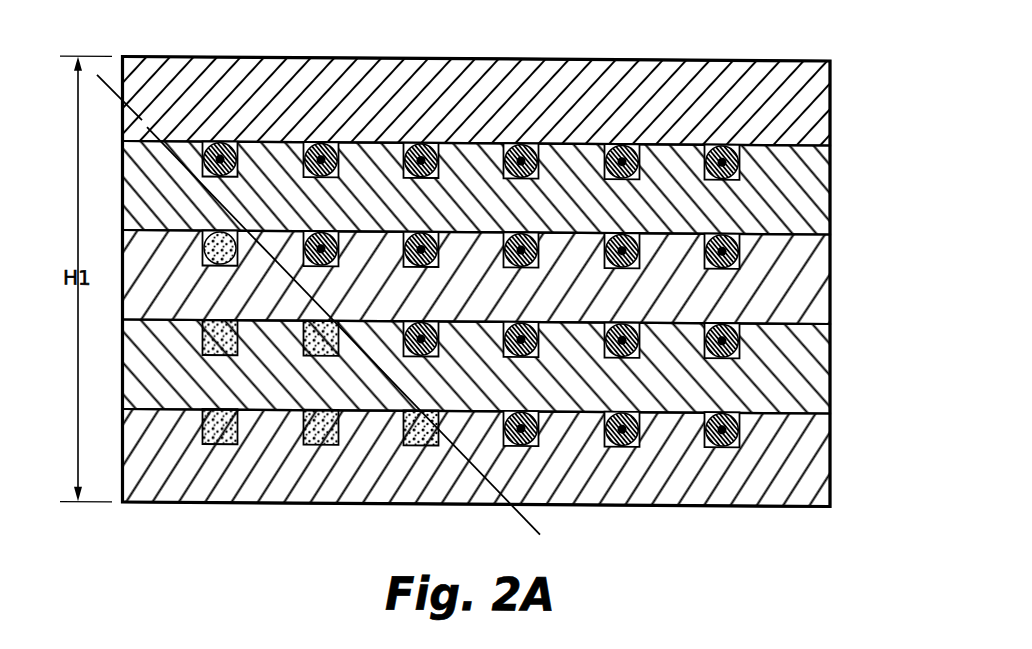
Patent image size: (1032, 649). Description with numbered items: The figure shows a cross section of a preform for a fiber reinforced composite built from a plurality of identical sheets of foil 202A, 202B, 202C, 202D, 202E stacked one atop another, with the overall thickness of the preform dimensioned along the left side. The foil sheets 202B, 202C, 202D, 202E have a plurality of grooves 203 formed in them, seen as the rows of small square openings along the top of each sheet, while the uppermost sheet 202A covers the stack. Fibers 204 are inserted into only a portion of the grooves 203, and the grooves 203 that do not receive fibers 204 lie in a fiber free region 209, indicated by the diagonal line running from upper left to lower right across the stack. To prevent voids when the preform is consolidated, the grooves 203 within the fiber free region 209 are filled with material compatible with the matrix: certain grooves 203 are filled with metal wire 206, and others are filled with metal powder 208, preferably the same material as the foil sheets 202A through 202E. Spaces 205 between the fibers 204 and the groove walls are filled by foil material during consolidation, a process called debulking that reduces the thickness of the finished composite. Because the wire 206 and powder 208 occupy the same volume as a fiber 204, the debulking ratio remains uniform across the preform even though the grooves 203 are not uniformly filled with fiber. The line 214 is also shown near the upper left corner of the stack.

The foil sheet 202A is at (818, 107).
The foil sheet 202B is at (817, 190).
The foil sheet 202C is at (816, 272).
The foil sheet 202D is at (816, 378).
The foil sheet 202E is at (815, 458).
The grooves 203 is at (238, 141).
The fibers 204 is at (332, 230).
The spaces 205 is at (535, 175).
The metal wire 206 is at (205, 249).
The metal powder 208 is at (204, 345).
The fiber free region 209 is at (370, 344).
The cut line 214 is at (99, 74).